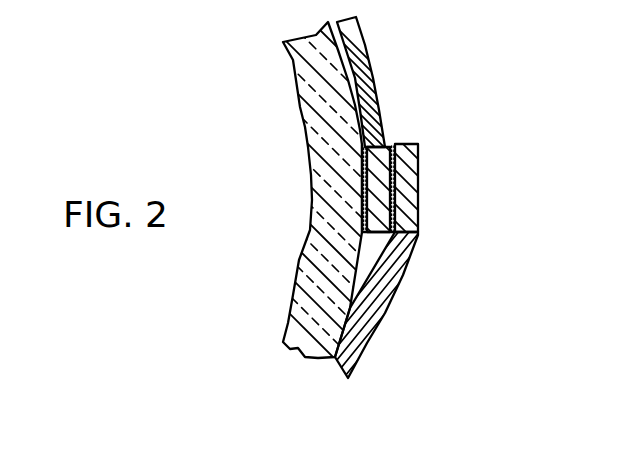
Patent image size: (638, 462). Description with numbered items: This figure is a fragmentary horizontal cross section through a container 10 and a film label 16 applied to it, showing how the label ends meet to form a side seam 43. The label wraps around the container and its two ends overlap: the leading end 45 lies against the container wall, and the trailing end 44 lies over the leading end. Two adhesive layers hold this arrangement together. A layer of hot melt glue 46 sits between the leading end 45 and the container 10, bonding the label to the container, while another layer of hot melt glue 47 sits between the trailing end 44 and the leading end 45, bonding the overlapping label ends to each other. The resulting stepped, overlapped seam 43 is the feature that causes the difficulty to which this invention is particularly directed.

The container 10 is at (308, 125).
The label 16 is at (372, 73).
The side seam 43 is at (461, 202).
The trailing end 44 is at (412, 168).
The leading end 45 is at (418, 226).
The layer of hot melt glue 46 is at (366, 204).
The layer of hot melt glue 47 is at (388, 150).